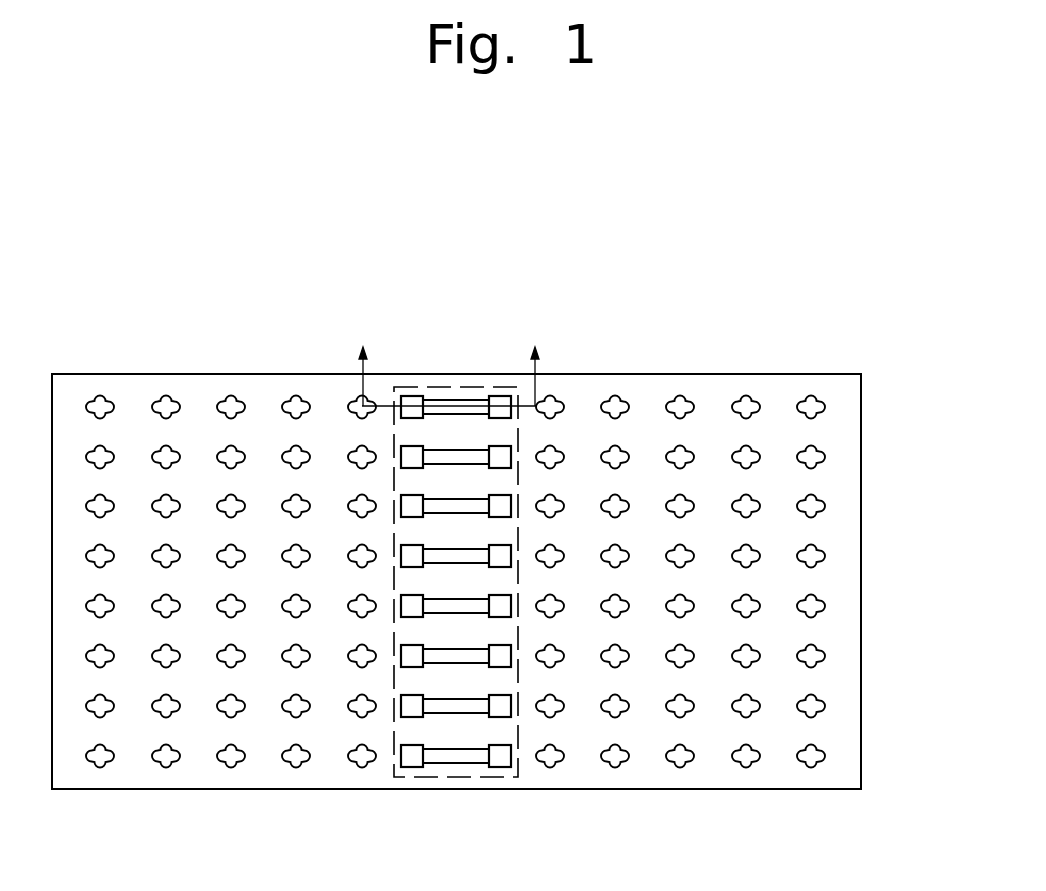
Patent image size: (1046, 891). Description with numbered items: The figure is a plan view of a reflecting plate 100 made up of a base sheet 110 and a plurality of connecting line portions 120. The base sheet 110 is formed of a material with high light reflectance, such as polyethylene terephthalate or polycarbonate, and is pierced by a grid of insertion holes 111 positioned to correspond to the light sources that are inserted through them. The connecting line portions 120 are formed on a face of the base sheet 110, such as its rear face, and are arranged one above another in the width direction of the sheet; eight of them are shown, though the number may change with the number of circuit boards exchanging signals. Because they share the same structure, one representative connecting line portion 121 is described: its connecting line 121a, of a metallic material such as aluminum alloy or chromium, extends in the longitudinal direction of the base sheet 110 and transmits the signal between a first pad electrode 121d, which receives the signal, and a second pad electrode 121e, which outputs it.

The reflecting plate 100 is at (846, 261).
The base sheet 110 is at (843, 423).
The insertion holes 111 is at (100, 396).
The connecting line portions 120 is at (457, 778).
The connecting line portion 121 is at (540, 290).
The second pad electrode 121e is at (412, 393).
The connecting line 121a is at (437, 401).
The first pad electrode 121d is at (498, 393).